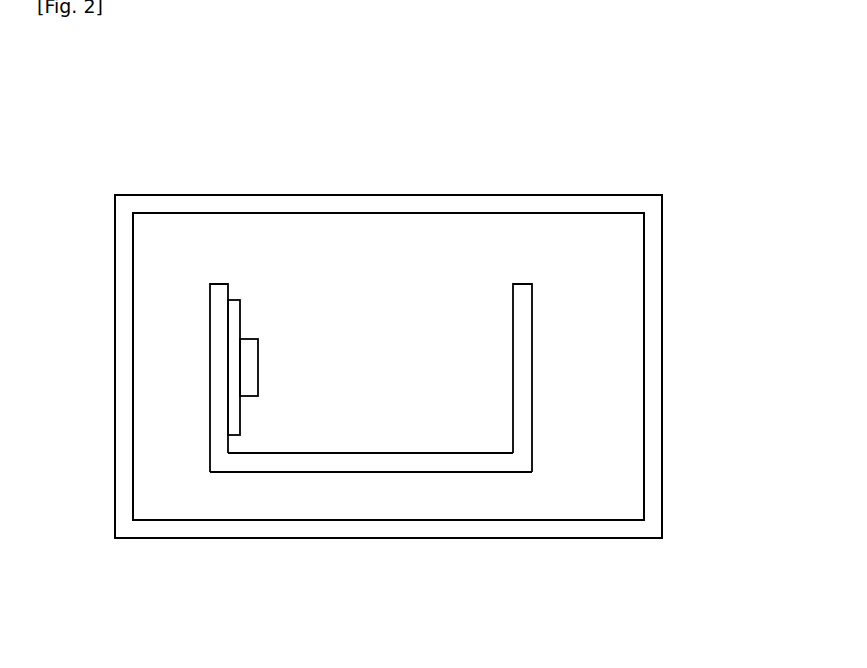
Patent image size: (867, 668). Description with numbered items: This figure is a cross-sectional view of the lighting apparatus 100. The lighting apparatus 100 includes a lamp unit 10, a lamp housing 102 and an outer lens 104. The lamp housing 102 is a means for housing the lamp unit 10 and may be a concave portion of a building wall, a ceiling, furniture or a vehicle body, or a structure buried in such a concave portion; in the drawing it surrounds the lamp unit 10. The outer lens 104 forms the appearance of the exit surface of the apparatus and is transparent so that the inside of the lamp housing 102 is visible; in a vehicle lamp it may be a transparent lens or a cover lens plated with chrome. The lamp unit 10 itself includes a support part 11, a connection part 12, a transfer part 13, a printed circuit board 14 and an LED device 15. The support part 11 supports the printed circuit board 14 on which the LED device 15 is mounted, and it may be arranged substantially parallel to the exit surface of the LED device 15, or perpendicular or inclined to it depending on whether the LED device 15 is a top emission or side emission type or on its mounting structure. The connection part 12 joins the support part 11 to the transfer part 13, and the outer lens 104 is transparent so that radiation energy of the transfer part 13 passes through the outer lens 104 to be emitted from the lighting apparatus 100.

The lighting apparatus 100 is at (377, 170).
The lamp housing 102 is at (280, 205).
The outer lens 104 is at (663, 366).
The lamp unit 10 is at (340, 482).
The support part 11 is at (220, 417).
The connection part 12 is at (377, 462).
The transfer part 13 is at (533, 417).
The printed circuit board 14 is at (235, 374).
The LED device 15 is at (243, 350).